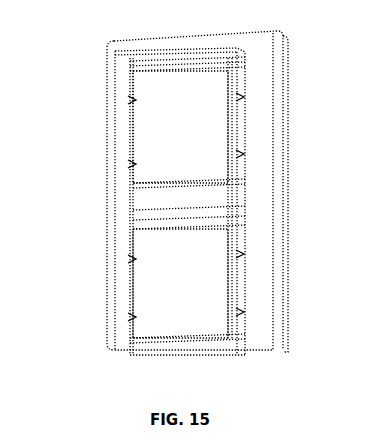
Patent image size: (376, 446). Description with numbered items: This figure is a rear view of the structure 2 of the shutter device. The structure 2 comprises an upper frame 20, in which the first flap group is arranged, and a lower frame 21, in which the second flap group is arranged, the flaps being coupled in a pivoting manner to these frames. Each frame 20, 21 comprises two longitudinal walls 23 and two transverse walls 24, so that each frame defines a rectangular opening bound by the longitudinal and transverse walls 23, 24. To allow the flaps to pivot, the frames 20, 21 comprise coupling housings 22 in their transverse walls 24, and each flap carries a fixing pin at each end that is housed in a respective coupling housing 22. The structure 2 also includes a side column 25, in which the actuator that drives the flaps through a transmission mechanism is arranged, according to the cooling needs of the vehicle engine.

The structure 2 is at (93, 83).
The upper frame 20 is at (125, 140).
The lower frame 21 is at (127, 298).
The coupling housing 22 is at (127, 164).
The longitudinal wall 23 is at (195, 67).
The transverse wall 24 is at (135, 120).
The side column 25 is at (258, 210).